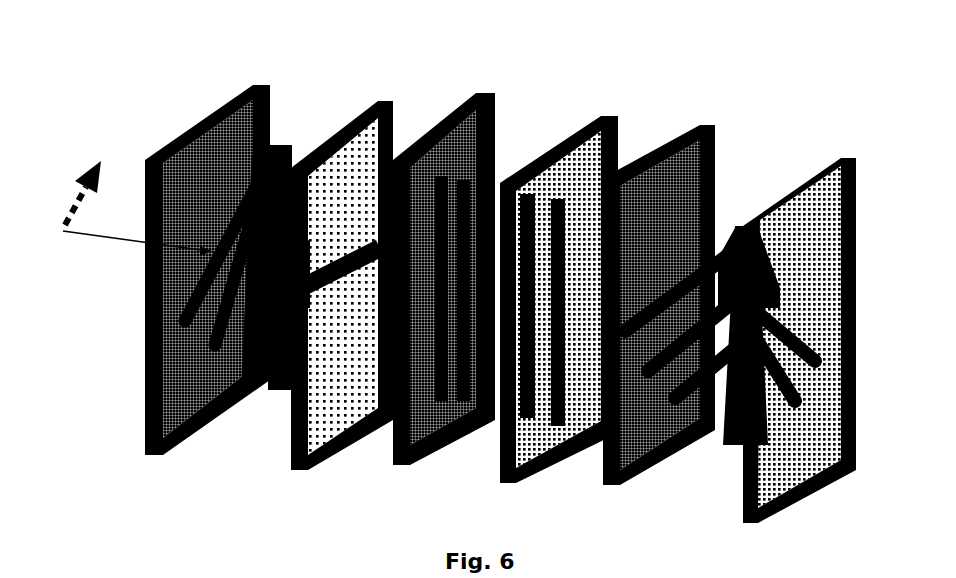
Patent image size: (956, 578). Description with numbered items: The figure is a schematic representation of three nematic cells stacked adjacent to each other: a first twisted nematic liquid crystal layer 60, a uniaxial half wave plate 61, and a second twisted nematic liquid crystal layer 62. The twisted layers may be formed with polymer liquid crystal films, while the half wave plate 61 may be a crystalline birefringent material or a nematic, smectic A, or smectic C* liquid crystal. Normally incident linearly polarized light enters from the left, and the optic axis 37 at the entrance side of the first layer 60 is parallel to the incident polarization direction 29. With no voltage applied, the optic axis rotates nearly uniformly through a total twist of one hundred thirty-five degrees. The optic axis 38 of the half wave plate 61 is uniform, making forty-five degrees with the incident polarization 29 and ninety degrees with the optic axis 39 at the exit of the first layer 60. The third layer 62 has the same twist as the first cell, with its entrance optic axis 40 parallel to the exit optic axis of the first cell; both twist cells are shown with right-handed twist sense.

The incident polarization direction 29 is at (83, 148).
The optic axis at the entrance side of the first liquid crystal layer 37 is at (197, 277).
The optic axis of the second liquid crystal layer 38 is at (433, 310).
The optic axis at the exit of the first layer 39 is at (283, 337).
The optic axis at the entrance of the third liquid crystal layer 40 is at (638, 313).
The first twisted nematic liquid crystal layer 60 is at (247, 68).
The uniaxial half wave plate 61 is at (483, 92).
The second twisted nematic liquid crystal layer 62 is at (707, 113).